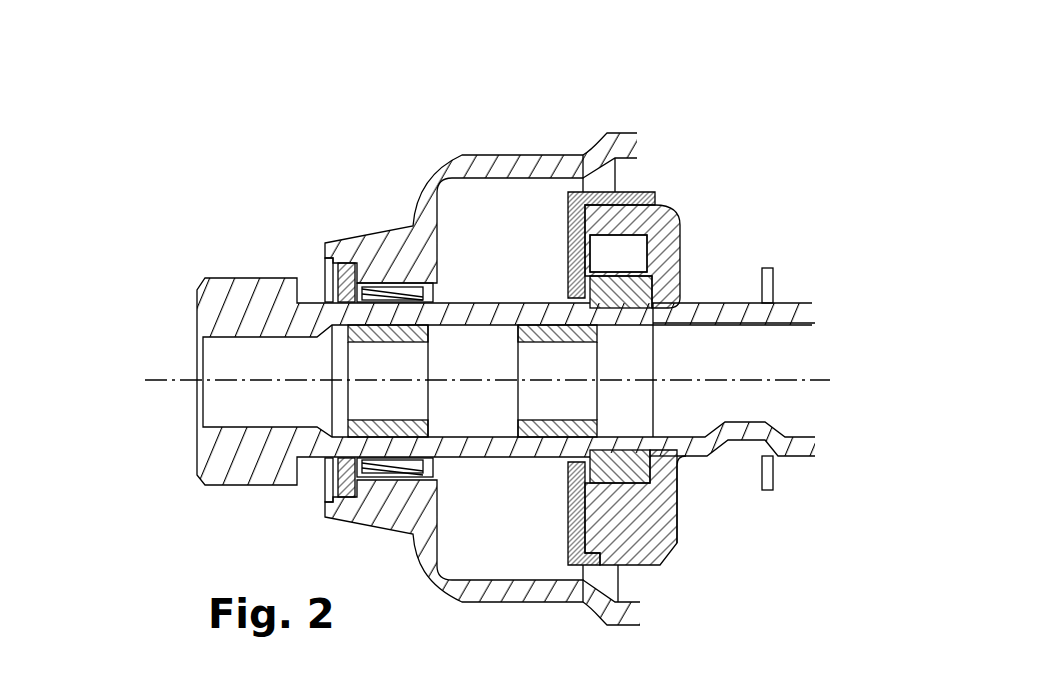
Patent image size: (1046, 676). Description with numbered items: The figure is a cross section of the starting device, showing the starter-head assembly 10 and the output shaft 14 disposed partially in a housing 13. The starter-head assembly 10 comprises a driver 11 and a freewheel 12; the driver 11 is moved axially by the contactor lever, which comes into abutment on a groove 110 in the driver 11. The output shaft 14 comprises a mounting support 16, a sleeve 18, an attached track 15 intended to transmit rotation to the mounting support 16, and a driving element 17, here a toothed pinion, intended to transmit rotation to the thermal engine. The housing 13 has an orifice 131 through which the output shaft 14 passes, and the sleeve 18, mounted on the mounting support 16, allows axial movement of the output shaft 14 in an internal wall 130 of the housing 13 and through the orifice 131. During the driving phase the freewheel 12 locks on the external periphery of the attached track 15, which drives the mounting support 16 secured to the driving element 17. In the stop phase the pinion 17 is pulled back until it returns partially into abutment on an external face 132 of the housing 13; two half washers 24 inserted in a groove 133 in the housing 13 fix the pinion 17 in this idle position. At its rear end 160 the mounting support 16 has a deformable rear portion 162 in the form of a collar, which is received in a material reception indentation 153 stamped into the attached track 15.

The starter-head assembly 10 is at (678, 563).
The driver 11 is at (632, 530).
The freewheel 12 is at (613, 247).
The housing 13 is at (365, 257).
The output shaft 14 is at (150, 487).
The attached track 15 is at (610, 290).
The mounting support 16 is at (415, 307).
The driving element 17 is at (240, 307).
The sleeve 18 is at (388, 470).
The half washers 24 is at (323, 287).
The groove 110 is at (708, 458).
The internal wall 130 is at (412, 443).
The orifice 131 is at (323, 464).
The external face 132 is at (322, 290).
The groove 133 is at (333, 515).
The material reception indentation 153 is at (633, 270).
The rear end 160 is at (612, 318).
The rear portion 162 is at (655, 307).